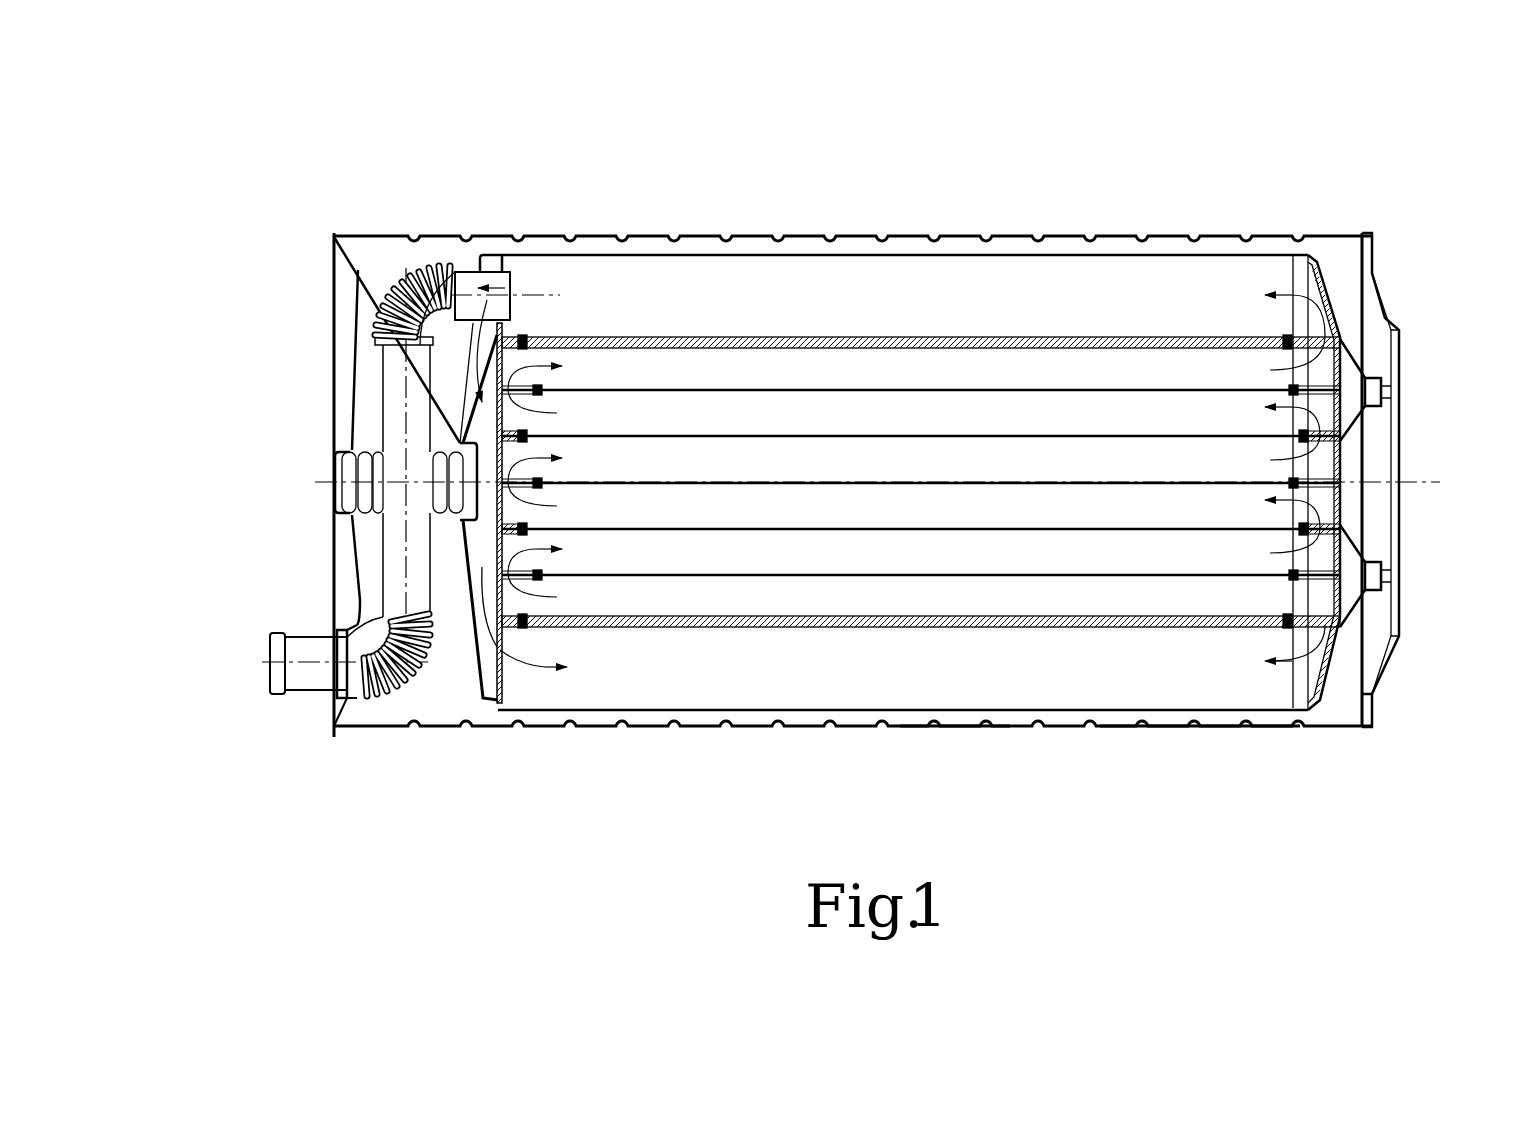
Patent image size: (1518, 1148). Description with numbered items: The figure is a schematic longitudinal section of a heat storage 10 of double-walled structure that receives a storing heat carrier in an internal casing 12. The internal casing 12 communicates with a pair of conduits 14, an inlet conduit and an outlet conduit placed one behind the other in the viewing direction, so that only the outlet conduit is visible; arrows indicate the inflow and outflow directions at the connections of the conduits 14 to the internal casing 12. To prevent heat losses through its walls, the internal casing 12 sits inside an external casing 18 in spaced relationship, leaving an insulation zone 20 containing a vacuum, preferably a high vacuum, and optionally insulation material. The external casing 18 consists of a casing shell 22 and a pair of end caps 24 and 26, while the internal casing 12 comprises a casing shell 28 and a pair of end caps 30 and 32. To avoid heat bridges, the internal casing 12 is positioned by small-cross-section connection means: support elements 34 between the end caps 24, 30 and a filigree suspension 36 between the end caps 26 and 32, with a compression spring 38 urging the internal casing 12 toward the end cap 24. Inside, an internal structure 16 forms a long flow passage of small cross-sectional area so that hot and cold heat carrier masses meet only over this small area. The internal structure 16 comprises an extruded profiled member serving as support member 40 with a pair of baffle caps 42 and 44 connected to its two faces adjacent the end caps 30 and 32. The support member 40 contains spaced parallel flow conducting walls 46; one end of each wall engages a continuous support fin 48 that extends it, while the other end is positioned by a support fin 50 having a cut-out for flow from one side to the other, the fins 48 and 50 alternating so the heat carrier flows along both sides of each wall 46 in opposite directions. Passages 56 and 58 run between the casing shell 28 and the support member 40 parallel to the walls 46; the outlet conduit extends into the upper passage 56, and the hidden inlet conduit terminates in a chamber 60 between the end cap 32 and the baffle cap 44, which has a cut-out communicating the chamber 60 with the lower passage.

The heat storage 10 is at (853, 495).
The internal casing 12 is at (683, 673).
The conduits 14 is at (397, 528).
The internal structure 16 is at (1339, 653).
The external casing 18 is at (1068, 735).
The insulation zone 20 is at (955, 722).
The casing shell 22 is at (690, 237).
The end cap 24 is at (1385, 300).
The end cap 26 is at (358, 350).
The casing shell 28 is at (1165, 710).
The end cap 30 is at (1322, 260).
The end cap 32 is at (480, 673).
The support elements 34 is at (1372, 557).
The filigree suspension 36 is at (442, 413).
The compression spring 38 is at (367, 493).
The support member 40 is at (800, 338).
The baffle cap 42 is at (1339, 339).
The baffle cap 44 is at (457, 523).
The flow conducting walls 46 is at (915, 430).
The continuous support fin 48 is at (1339, 480).
The support fin 50 is at (1365, 418).
The passage 56 is at (822, 663).
The passage 58 is at (628, 297).
The chamber 60 is at (450, 548).